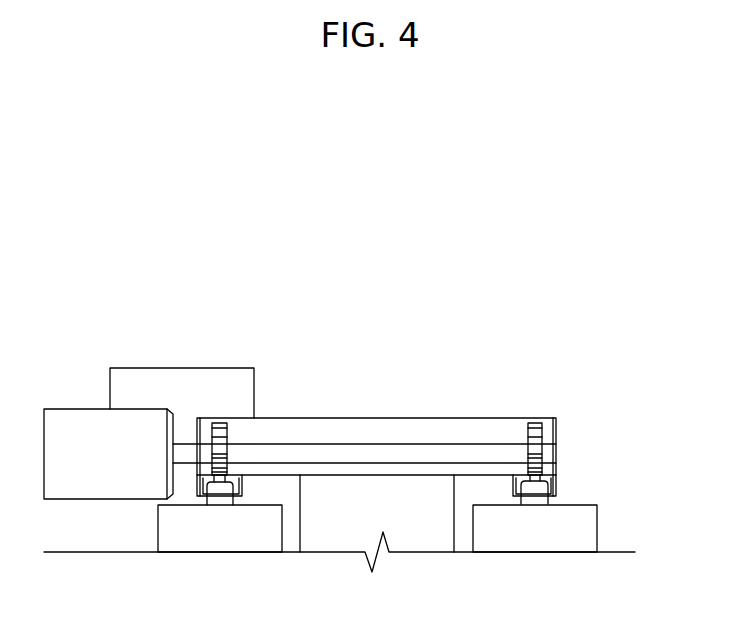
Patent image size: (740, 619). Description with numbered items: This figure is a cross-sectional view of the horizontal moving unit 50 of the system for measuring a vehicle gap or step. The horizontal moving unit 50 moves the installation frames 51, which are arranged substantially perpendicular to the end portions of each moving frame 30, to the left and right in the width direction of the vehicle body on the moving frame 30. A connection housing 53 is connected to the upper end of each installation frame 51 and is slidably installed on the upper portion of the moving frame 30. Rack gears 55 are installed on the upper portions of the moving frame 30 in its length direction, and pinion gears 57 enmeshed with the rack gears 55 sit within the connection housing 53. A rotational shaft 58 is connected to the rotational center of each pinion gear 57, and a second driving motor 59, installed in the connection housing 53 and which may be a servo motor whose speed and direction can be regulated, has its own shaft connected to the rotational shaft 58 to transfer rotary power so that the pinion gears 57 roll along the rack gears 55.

The moving frame 30 is at (353, 544).
The horizontal moving unit 50 is at (326, 395).
The installation frame 51 is at (428, 532).
The connection housing 53 is at (341, 430).
The rack gear 55 is at (215, 493).
The pinion gear 57 is at (218, 425).
The rotational shaft 58 is at (427, 455).
The second driving motor 59 is at (72, 430).